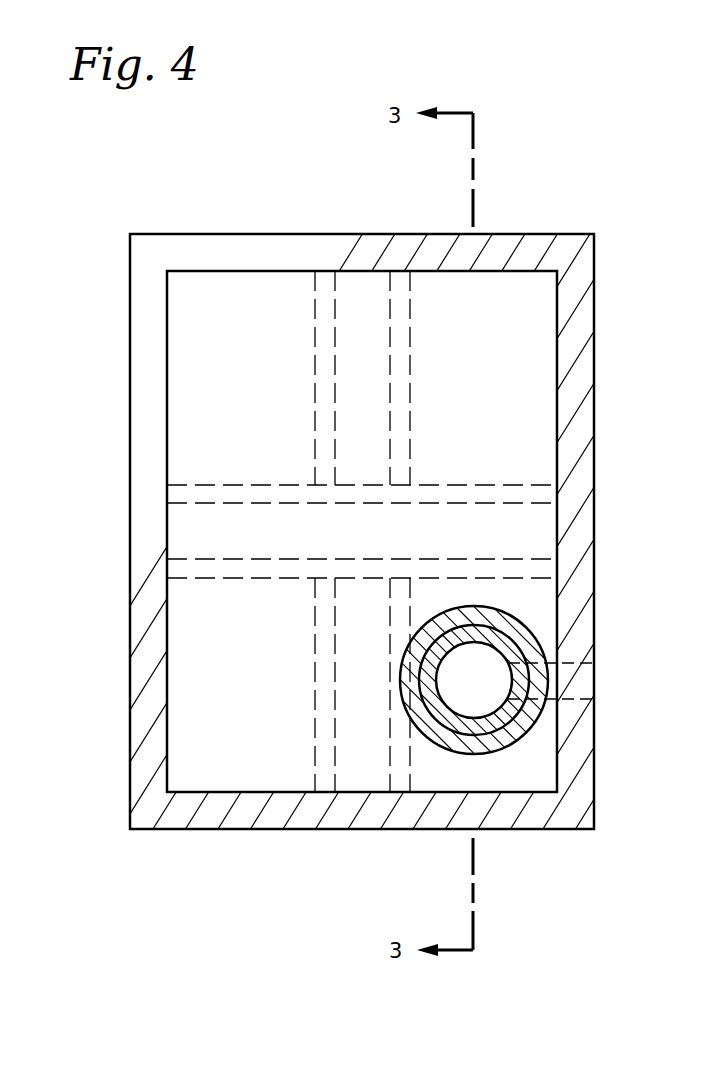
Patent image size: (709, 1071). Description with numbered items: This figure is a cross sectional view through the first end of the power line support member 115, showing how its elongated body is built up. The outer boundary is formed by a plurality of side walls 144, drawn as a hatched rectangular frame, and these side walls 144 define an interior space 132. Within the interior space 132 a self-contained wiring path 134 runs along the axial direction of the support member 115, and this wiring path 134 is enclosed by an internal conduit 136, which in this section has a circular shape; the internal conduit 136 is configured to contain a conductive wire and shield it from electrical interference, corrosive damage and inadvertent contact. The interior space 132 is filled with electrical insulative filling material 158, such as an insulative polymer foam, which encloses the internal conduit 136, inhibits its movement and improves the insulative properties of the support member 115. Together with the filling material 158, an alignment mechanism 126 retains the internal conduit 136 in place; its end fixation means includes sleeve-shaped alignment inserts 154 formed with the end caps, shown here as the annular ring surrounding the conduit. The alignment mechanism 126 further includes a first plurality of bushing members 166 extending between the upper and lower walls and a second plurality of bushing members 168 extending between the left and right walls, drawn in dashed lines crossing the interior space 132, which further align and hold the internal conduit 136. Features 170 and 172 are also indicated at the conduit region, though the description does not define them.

The support member 115 is at (270, 860).
The alignment mechanism 126 is at (500, 472).
The interior space 132 is at (192, 345).
The self-contained wiring path 134 is at (468, 698).
The internal conduit 136 is at (500, 613).
The side walls 144 is at (515, 235).
The alignment inserts 154 is at (470, 755).
The filling material 158 is at (238, 317).
The first plurality of bushing members 166 is at (317, 305).
The second plurality of bushing members 168 is at (223, 485).
The outlet channel 170 is at (592, 660).
The sealing ring 172 is at (523, 710).